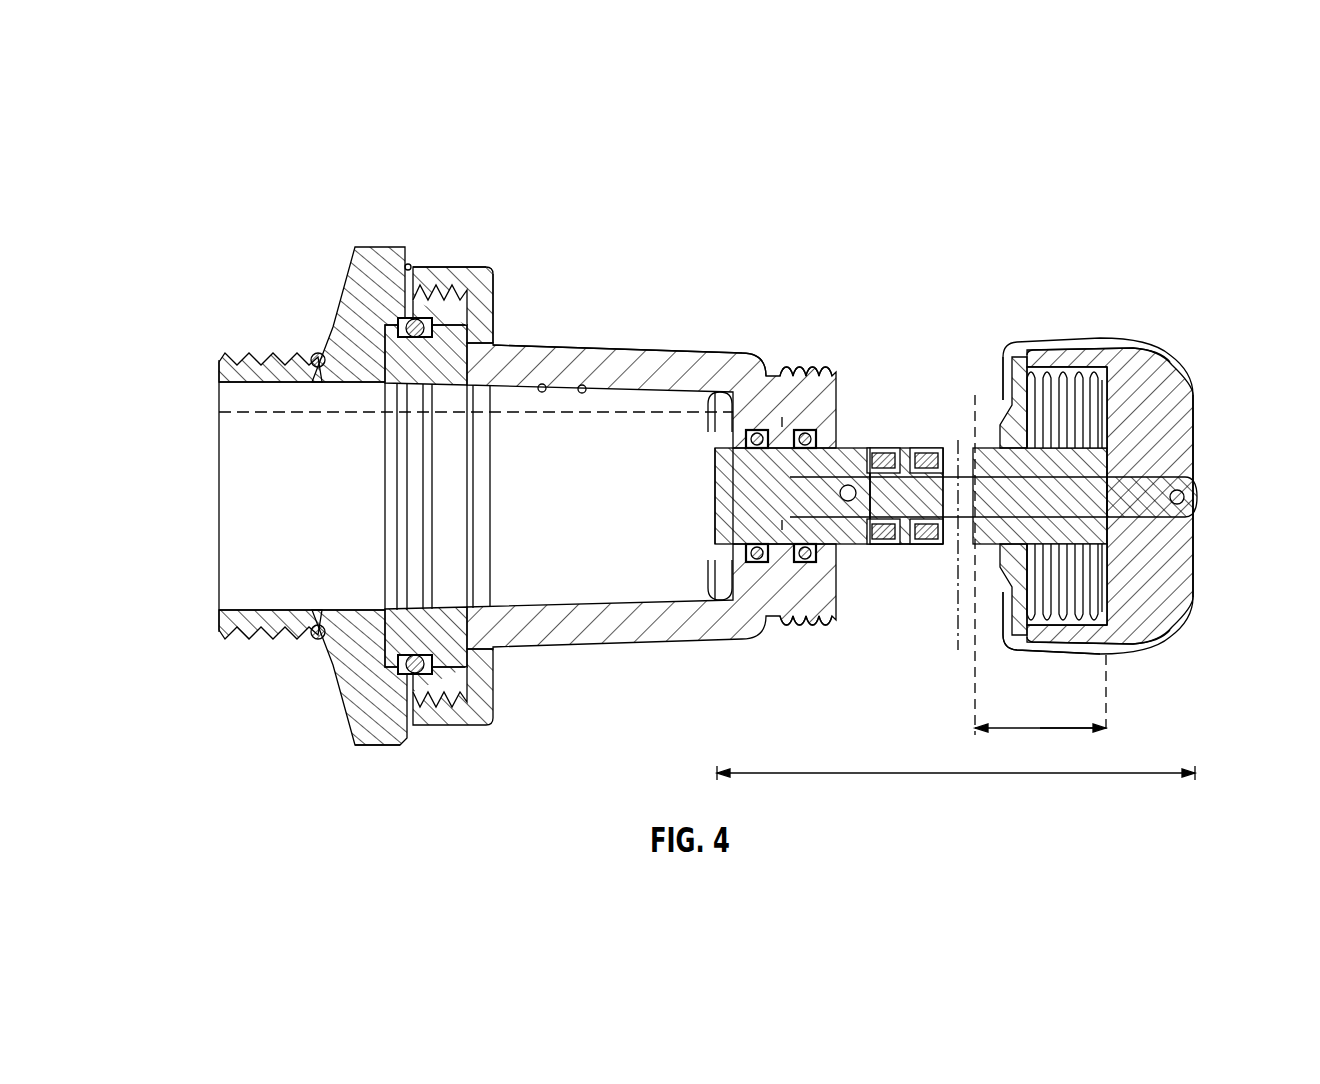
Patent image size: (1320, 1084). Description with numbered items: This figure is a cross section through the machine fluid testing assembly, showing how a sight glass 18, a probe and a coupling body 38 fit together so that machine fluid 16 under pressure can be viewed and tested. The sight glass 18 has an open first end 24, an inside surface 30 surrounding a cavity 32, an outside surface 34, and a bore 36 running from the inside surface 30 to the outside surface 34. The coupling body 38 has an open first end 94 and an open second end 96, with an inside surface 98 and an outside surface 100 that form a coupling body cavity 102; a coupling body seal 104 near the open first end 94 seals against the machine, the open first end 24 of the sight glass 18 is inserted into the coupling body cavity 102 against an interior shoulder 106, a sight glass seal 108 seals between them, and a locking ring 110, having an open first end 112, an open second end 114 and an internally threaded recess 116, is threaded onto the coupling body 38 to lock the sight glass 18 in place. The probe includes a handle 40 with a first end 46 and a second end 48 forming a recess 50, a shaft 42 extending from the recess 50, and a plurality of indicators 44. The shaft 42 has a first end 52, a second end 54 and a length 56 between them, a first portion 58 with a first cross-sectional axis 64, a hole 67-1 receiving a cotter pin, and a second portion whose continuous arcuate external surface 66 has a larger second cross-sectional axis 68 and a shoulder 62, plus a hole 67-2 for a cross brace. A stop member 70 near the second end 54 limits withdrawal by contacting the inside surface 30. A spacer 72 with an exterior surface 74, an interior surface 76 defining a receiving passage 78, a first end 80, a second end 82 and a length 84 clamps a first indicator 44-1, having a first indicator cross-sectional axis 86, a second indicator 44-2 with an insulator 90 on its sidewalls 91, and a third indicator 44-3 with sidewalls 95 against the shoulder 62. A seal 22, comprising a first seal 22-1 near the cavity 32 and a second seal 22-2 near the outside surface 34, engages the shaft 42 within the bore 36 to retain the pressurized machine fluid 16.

The machine fluid 16 is at (607, 412).
The sight glass 18 is at (660, 645).
The seal 22 is at (800, 440).
The first seal 22-1 is at (745, 560).
The second seal 22-2 is at (781, 471).
The open first end 24 is at (380, 335).
The inside surface 30 is at (540, 384).
The cavity 32 is at (580, 385).
The outside surface 34 is at (587, 357).
The bore 36 is at (727, 516).
The coupling body 38 is at (384, 247).
The handle 40 is at (1090, 338).
The shaft 42 is at (1191, 462).
The plurality of indicators 44 is at (905, 568).
The first indicator 44-1 is at (925, 545).
The second indicator 44-2 is at (920, 545).
The third indicator 44-3 is at (870, 560).
The first end 46 is at (1194, 392).
The second end 48 is at (1005, 355).
The recess 50 is at (1040, 565).
The first end 52 is at (1195, 497).
The second end 54 is at (743, 354).
The length 56 is at (950, 768).
The first portion 58 is at (1007, 550).
The shoulder 62 is at (872, 540).
The first cross-sectional axis 64 is at (1040, 519).
The continuous arcuate external surface 66 is at (806, 376).
The hole 67-1 is at (1187, 522).
The hole 67-2 is at (793, 627).
The second cross-sectional axis 68 is at (723, 488).
The stop member 70 is at (712, 438).
The spacer 72 is at (993, 463).
The exterior surface 74 is at (1000, 580).
The interior surface 76 is at (1000, 637).
The receiving passage 78 is at (1018, 345).
The first end 80 is at (1190, 424).
The second end 82 is at (1003, 400).
The length 84 is at (1045, 730).
The first indicator cross-sectional axis 86 is at (957, 504).
The insulator 90 is at (883, 448).
The sidewalls 91 is at (933, 448).
The open first end 94 is at (215, 622).
The sidewalls 95 is at (845, 447).
The open second end 96 is at (493, 700).
The inside surface 98 is at (312, 625).
The outside surface 100 is at (378, 748).
The coupling body cavity 102 is at (232, 387).
The coupling body seal 104 is at (312, 356).
The interior shoulder 106 is at (355, 722).
The sight glass seal 108 is at (445, 730).
The locking ring 110 is at (432, 264).
The open first end 112 is at (495, 286).
The open second end 114 is at (410, 264).
The recess 116 is at (460, 266).